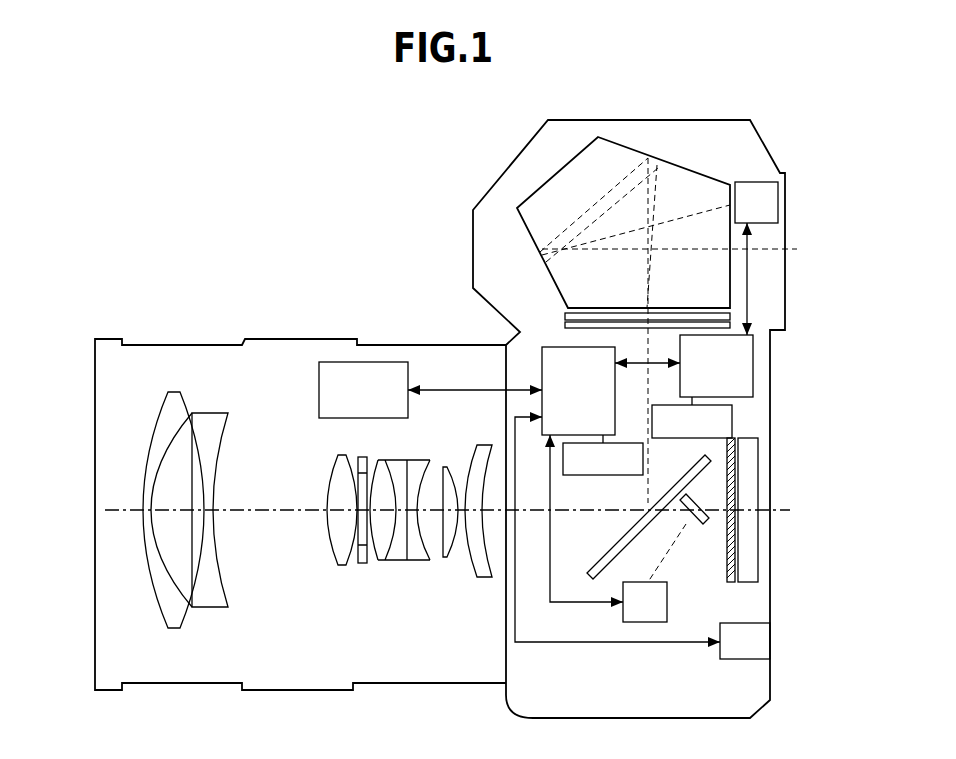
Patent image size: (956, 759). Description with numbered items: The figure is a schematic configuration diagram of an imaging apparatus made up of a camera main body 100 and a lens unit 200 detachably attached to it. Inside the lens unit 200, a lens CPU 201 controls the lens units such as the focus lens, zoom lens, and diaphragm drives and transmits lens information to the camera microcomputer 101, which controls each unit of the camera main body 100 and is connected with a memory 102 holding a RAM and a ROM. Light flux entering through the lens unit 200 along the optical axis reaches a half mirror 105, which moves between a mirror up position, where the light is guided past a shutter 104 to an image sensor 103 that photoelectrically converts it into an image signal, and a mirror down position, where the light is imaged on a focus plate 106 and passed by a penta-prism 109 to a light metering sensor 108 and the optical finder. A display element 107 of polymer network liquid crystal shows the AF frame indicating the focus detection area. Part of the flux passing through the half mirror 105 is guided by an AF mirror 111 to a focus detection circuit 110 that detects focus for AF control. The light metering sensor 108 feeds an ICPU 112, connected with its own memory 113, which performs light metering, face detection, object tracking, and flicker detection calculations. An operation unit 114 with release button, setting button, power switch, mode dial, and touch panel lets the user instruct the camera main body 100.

The camera main body 100 is at (768, 686).
The camera microcomputer 101 is at (538, 358).
The memory 102 is at (572, 475).
The image sensor 103 is at (752, 565).
The shutter 104 is at (736, 456).
The half mirror 105 is at (700, 474).
The focus plate 106 is at (567, 325).
The display element 107 is at (705, 318).
The light metering sensor 108 is at (779, 203).
The penta-prism 109 is at (548, 193).
The focus detection circuit 110 is at (668, 600).
The AF mirror 111 is at (708, 518).
The ICPU 112 is at (754, 363).
The memory 113 is at (733, 418).
The operation unit 114 is at (758, 641).
The lens unit 200 is at (105, 372).
The lens CPU 201 is at (343, 362).